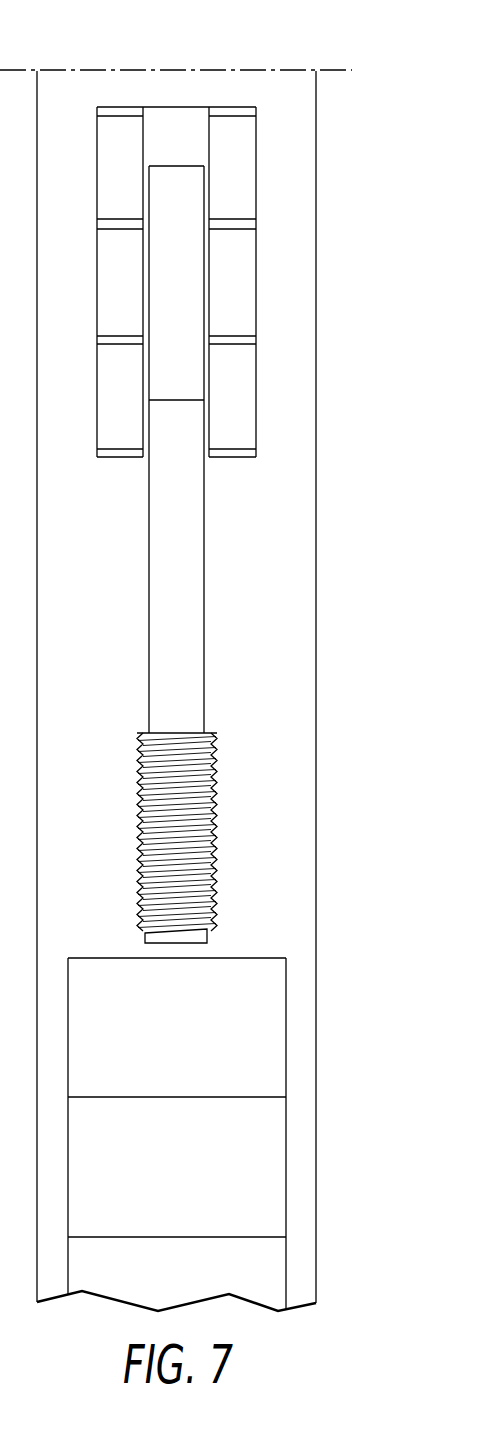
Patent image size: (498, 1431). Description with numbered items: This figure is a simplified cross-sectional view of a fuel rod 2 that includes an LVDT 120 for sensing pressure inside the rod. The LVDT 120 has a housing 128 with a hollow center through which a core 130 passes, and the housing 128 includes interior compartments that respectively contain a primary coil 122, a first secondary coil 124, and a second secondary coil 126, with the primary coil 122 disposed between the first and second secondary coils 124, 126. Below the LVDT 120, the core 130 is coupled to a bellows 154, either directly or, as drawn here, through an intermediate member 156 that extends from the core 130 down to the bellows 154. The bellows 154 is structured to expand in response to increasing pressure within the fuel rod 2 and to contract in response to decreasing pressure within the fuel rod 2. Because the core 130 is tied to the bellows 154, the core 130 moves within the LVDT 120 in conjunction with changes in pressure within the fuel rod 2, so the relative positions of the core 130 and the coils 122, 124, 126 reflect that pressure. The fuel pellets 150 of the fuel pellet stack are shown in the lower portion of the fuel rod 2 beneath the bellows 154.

The fuel rod 2 is at (317, 407).
The LVDT 120 is at (176, 232).
The primary coil 122 is at (103, 265).
The first secondary coil 124 is at (97, 140).
The second secondary coil 126 is at (108, 383).
The housing 128 is at (257, 212).
The core 130 is at (176, 261).
The fuel pellets 150 is at (263, 1154).
The bellows 154 is at (253, 968).
The intermediate member 156 is at (188, 598).